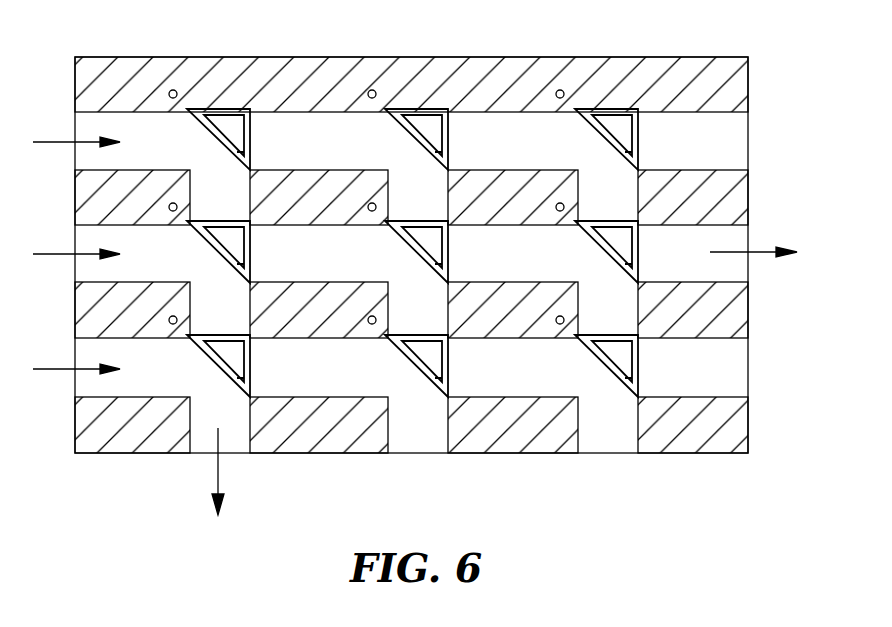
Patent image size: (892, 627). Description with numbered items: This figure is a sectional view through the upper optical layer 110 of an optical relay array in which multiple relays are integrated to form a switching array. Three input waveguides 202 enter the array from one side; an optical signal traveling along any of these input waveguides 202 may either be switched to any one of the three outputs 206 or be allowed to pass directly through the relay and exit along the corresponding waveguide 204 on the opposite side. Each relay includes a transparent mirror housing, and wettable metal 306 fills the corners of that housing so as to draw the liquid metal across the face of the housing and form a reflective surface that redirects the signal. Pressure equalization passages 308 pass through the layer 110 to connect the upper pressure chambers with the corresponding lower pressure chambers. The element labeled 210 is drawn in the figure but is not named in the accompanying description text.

The upper optical layer 110 is at (748, 80).
The input waveguides 202 is at (83, 124).
The waveguide 204 is at (737, 140).
The outputs 206 is at (232, 437).
The channel wall 210 is at (435, 108).
The wettable metal 306 is at (207, 117).
The pressure equalization passages 308 is at (365, 96).